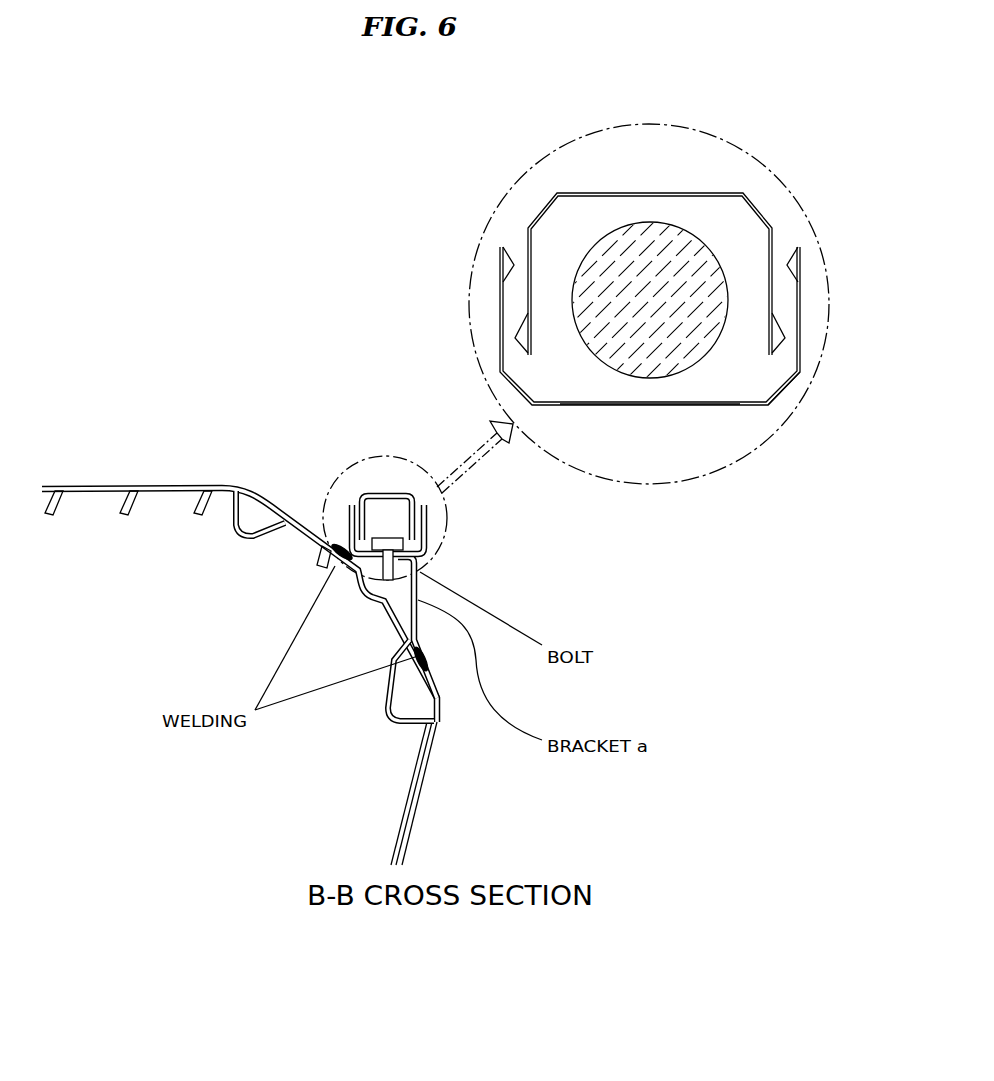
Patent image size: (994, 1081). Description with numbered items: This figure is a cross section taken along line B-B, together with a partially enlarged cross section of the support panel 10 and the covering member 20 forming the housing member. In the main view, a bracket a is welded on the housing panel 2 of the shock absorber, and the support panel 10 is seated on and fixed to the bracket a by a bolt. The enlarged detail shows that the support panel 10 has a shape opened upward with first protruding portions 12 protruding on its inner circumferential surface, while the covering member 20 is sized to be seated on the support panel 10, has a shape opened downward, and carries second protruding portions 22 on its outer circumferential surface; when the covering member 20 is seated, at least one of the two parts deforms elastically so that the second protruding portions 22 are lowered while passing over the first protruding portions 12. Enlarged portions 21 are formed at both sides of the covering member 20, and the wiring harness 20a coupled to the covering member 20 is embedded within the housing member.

The housing panel 2 is at (268, 510).
The support panel 10 is at (428, 535).
The first protruding portions 12 is at (791, 258).
The covering member 20 is at (387, 493).
The wiring harness 20a is at (634, 238).
The enlarged portions 21 is at (768, 406).
The second protruding portions 22 is at (650, 444).